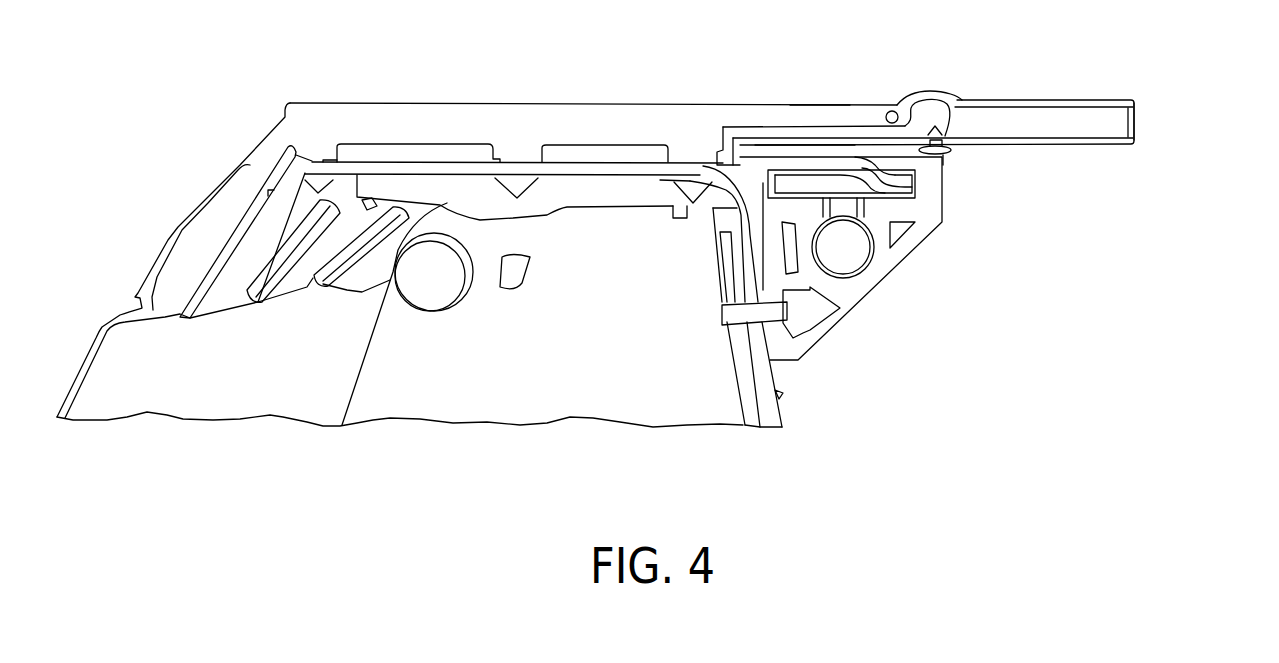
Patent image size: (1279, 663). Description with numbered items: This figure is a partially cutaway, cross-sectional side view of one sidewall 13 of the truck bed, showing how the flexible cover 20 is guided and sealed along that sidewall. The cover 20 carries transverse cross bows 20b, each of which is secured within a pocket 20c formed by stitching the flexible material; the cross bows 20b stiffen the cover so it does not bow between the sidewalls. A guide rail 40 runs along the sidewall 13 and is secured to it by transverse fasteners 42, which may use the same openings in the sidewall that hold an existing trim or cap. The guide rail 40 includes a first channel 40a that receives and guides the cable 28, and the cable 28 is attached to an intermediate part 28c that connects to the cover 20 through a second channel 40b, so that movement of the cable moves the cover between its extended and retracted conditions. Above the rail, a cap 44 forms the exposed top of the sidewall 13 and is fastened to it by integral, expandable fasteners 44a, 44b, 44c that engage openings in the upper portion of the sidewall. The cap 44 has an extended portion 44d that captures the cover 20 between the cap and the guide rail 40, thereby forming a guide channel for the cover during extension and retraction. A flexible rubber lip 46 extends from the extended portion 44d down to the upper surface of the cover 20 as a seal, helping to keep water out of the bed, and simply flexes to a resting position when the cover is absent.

The sidewall 13 is at (757, 418).
The flexible cover 20 is at (1047, 98).
The cross bow 20b is at (1133, 120).
The pocket 20c is at (1160, 98).
The cable 28 is at (862, 248).
The intermediate part 28c is at (883, 189).
The guide rail 40 is at (897, 254).
The first channel 40a is at (905, 233).
The second channel 40b is at (913, 171).
The transverse fastener 42 is at (800, 320).
The cap 44 is at (518, 103).
The expandable fastener 44a is at (693, 200).
The expandable fastener 44b is at (518, 195).
The expandable fastener 44c is at (318, 178).
The extended portion 44d is at (820, 105).
The flexible rubber lip 46 is at (927, 92).